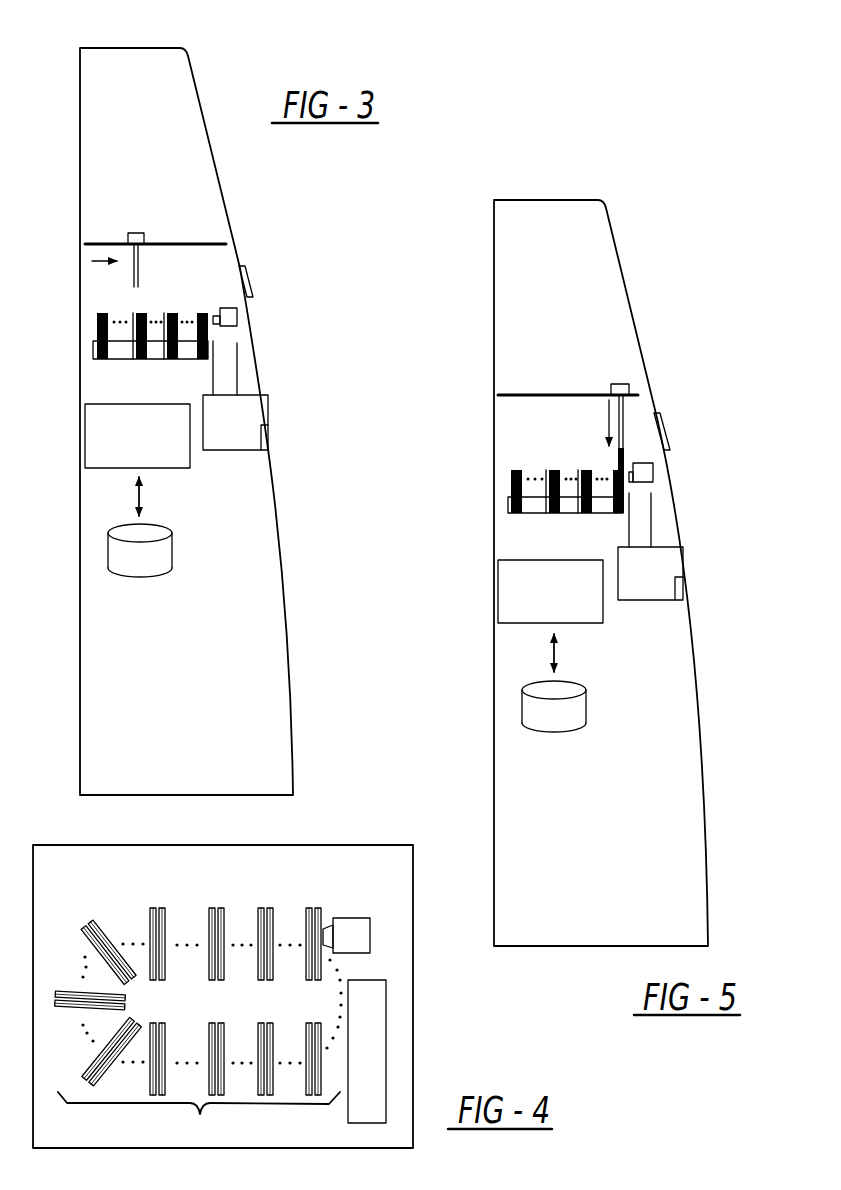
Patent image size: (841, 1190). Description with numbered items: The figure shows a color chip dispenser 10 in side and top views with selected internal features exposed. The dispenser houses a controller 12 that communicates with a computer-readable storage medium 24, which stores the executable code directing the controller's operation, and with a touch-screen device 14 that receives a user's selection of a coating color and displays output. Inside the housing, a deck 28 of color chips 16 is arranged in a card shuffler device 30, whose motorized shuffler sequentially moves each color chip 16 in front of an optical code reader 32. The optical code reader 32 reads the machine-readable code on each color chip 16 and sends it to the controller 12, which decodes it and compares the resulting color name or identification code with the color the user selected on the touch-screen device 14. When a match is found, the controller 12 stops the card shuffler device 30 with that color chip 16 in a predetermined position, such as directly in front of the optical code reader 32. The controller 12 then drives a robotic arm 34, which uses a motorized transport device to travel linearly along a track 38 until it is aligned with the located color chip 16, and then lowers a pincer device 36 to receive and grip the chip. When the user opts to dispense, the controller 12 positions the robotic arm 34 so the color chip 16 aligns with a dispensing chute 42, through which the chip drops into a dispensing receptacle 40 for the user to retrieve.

In FIG. 3, the color chip dispenser 10 is at (218, 58).
In FIG. 5, the color chip dispenser 10 is at (581, 170).
In FIG. 3, the controller 12 is at (103, 470).
In FIG. 5, the controller 12 is at (518, 627).
In FIG. 3, the touch-screen device 14 is at (249, 270).
In FIG. 5, the touch-screen device 14 is at (665, 417).
In FIG. 4, the color chip 16 is at (210, 902).
In FIG. 3, the computer-readable storage medium 24 is at (110, 548).
In FIG. 5, the computer-readable storage medium 24 is at (520, 705).
In FIG. 4, the deck 28 is at (199, 1120).
In FIG. 3, the card shuffler device 30 is at (86, 323).
In FIG. 4, the card shuffler device 30 is at (68, 912).
In FIG. 5, the card shuffler device 30 is at (501, 480).
In FIG. 4, the optical code reader 32 is at (352, 893).
In FIG. 5, the optical code reader 32 is at (655, 472).
In FIG. 3, the robotic arm 34 is at (133, 232).
In FIG. 5, the robotic arm 34 is at (620, 383).
In FIG. 3, the pincer device 36 is at (132, 282).
In FIG. 5, the pincer device 36 is at (617, 460).
In FIG. 3, the track 38 is at (190, 243).
In FIG. 5, the track 38 is at (553, 394).
In FIG. 3, the dispensing receptacle 40 is at (240, 417).
In FIG. 3, the dispensing chute 42 is at (236, 366).
In FIG. 4, the dispensing chute 42 is at (372, 1054).
In FIG. 5, the dispensing chute 42 is at (643, 534).